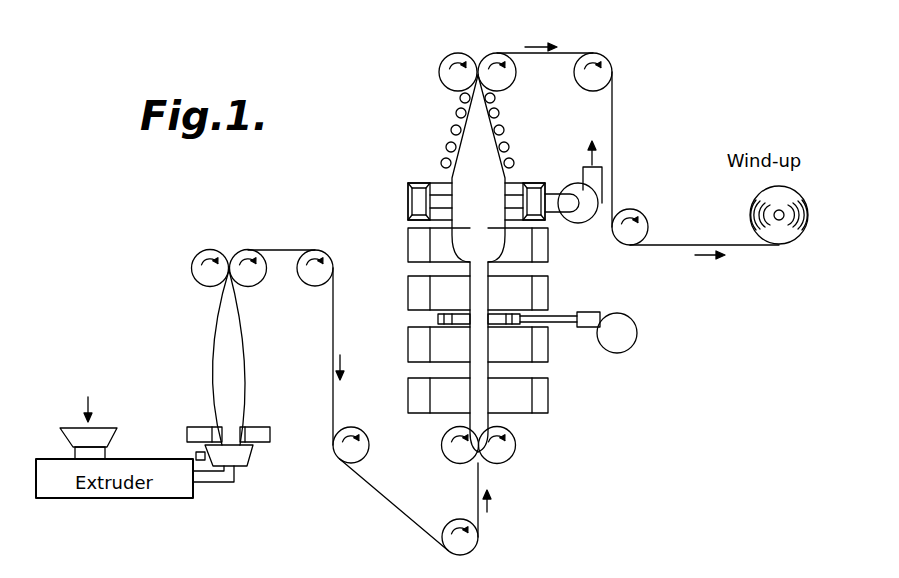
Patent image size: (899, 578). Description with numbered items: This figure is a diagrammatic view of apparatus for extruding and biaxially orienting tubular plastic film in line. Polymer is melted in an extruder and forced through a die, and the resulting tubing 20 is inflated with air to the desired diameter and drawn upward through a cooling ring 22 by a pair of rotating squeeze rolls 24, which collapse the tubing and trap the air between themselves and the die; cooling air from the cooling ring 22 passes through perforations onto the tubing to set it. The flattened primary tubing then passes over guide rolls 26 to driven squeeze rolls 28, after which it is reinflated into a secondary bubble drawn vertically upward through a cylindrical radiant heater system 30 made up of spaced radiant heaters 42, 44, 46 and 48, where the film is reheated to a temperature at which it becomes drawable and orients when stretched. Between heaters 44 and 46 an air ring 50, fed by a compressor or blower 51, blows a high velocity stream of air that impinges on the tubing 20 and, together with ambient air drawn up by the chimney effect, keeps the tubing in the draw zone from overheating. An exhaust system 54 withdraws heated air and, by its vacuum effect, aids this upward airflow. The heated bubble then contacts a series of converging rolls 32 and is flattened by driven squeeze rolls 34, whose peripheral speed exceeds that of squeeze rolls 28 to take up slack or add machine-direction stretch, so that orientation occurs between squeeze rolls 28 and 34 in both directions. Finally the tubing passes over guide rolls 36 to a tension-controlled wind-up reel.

The tubing 20 is at (235, 364).
The cooling ring 22 is at (258, 438).
The squeeze rolls 24 is at (200, 277).
The guide rolls 26 is at (310, 260).
The driven squeeze rolls 28 is at (448, 450).
The radiant heater system 30 is at (482, 263).
The converging rolls 32 is at (449, 128).
The driven squeeze rolls 34 is at (452, 62).
The guide rolls 36 is at (612, 64).
The radiant heater 42 is at (410, 246).
The radiant heater 44 is at (410, 297).
The radiant heater 46 is at (410, 344).
The radiant heater 48 is at (410, 393).
The air ring 50 is at (512, 324).
The blower 51 is at (640, 333).
The exhaust system 54 is at (400, 190).